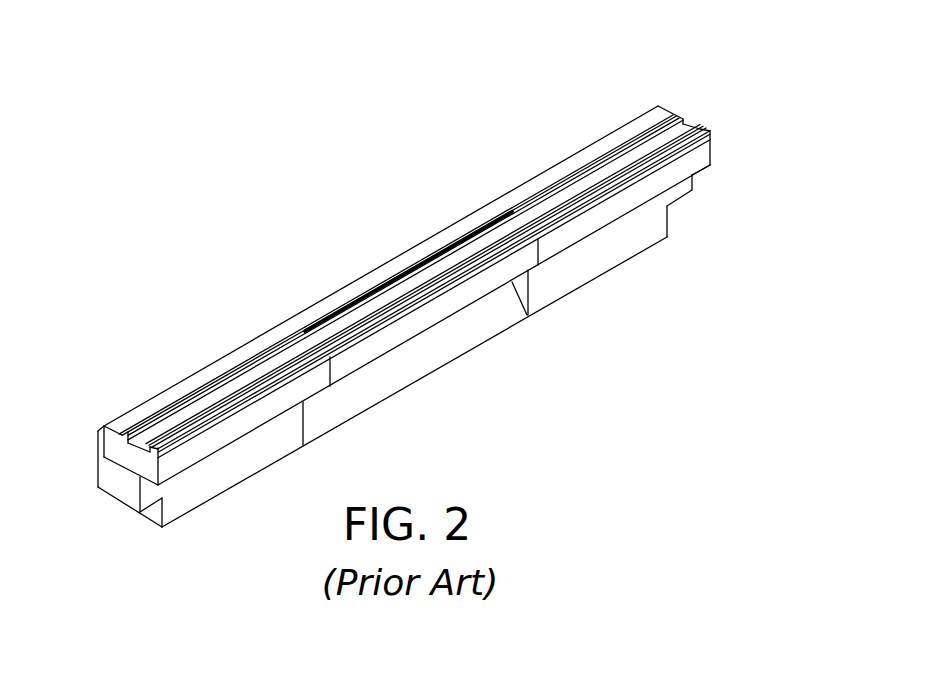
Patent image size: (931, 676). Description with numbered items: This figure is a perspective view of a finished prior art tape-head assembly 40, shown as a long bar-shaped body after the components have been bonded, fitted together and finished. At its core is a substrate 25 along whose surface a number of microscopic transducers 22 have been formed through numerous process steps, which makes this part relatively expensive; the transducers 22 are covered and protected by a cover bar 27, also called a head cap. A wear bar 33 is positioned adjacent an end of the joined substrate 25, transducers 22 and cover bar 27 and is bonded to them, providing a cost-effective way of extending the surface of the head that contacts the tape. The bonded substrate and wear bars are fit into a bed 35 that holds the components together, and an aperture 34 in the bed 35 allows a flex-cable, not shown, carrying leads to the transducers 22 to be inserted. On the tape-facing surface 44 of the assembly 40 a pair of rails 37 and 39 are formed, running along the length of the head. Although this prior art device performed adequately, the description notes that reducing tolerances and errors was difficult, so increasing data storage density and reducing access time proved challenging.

The transducers 22 is at (306, 328).
The substrate 25 is at (438, 231).
The cover bar 27 is at (458, 300).
The wear bar 33 is at (600, 142).
The aperture 34 is at (430, 357).
The bed 35 is at (623, 235).
The rail 37 is at (150, 417).
The rail 39 is at (695, 128).
The tape-head assembly 40 is at (292, 200).
The tape-facing surface 44 is at (364, 274).